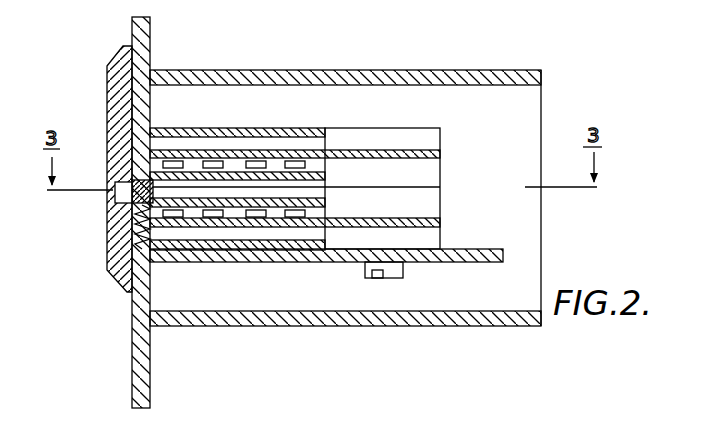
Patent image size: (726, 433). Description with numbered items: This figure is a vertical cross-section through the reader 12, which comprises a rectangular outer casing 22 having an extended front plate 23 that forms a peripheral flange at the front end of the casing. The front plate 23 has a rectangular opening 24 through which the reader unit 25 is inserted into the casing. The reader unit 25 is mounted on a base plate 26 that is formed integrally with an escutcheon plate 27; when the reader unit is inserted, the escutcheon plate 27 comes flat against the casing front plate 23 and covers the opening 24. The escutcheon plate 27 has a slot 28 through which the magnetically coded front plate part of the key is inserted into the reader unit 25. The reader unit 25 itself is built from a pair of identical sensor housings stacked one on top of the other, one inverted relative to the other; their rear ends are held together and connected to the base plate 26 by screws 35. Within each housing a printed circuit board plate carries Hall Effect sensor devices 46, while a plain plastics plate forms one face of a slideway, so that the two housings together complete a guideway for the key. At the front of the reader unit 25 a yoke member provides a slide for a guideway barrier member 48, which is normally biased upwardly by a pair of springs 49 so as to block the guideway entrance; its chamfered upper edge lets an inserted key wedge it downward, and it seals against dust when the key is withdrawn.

The reader 12 is at (464, 66).
The outer casing 22 is at (268, 70).
The front plate 23 is at (135, 362).
The rectangular opening 24 is at (150, 128).
The reader unit 25 is at (320, 126).
The base plate 26 is at (478, 255).
The escutcheon plate 27 is at (112, 252).
The slot 28 is at (113, 183).
The screws 35 is at (393, 268).
The Hall Effect sensor devices 46 is at (255, 165).
The guideway barrier member 48 is at (135, 200).
The springs 49 is at (128, 235).